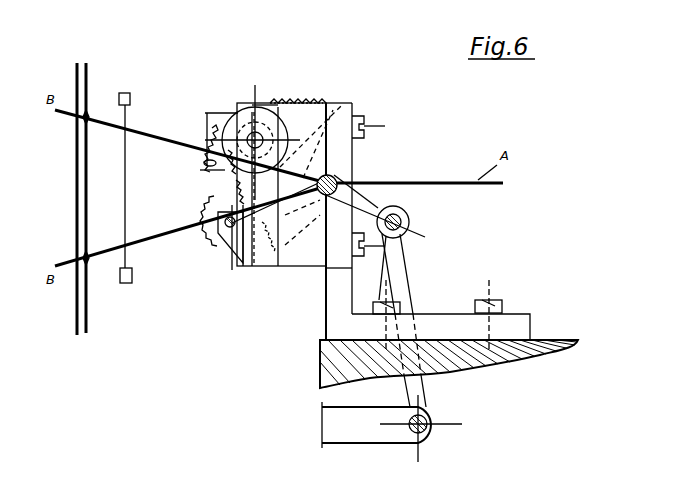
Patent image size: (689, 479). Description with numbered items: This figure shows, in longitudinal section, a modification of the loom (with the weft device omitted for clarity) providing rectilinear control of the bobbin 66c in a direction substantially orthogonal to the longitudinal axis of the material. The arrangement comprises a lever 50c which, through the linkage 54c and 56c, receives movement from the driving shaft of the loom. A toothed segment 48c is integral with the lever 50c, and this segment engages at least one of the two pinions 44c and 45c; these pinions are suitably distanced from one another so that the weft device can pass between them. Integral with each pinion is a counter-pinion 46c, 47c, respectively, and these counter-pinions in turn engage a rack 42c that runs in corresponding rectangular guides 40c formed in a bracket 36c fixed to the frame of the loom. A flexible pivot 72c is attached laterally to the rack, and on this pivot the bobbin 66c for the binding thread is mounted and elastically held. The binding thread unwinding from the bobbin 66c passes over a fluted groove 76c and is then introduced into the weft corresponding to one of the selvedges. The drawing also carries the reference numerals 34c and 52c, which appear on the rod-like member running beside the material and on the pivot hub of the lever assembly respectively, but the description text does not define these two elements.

The rod 34c is at (125, 218).
The bracket 36c is at (125, 283).
The rectangular guides 40c is at (266, 256).
The rack 42c is at (266, 108).
The pinion 44c is at (231, 240).
The pinion 45c is at (214, 170).
The counter-pinion 46c is at (228, 230).
The counter-pinion 47c is at (225, 192).
The toothed segment 48c is at (334, 101).
The lever 50c is at (396, 217).
The lever arm 52c is at (338, 187).
The linkage 54c is at (398, 273).
The linkage 56c is at (340, 430).
The bobbin 66c is at (252, 132).
The flexible pivot 72c is at (228, 112).
The fluted groove 76c is at (204, 163).